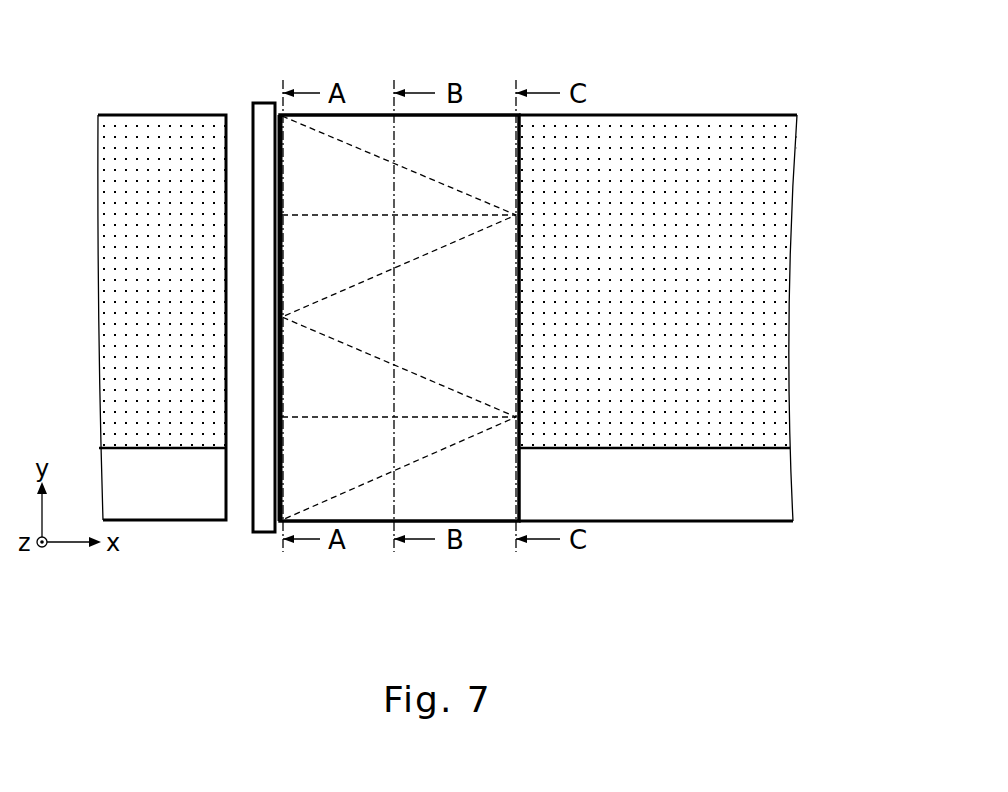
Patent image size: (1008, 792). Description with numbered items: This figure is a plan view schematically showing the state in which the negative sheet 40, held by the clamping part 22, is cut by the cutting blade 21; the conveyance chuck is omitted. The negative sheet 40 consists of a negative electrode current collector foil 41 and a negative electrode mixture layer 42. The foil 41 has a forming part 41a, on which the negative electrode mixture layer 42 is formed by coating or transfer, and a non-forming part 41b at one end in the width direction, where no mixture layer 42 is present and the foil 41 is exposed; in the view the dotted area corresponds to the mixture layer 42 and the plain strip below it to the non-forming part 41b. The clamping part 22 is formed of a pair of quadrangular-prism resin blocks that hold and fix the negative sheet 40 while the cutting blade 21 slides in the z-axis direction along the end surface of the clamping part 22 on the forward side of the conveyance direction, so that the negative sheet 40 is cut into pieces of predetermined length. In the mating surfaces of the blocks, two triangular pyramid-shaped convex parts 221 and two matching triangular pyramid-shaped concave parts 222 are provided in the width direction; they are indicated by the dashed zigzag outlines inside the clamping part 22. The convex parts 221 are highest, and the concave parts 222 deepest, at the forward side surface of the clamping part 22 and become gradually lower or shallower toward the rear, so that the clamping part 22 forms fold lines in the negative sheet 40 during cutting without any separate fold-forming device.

The cutting blade 21 is at (265, 110).
The clamping part 22 is at (492, 120).
The convex part 221 is at (358, 142).
The concave part 222 is at (358, 142).
The negative sheet 40 is at (716, 277).
The negative electrode current collector foil 41 is at (716, 471).
The forming part 41a is at (780, 435).
The non-forming part 41b is at (789, 500).
The negative electrode mixture layer 42 is at (786, 322).